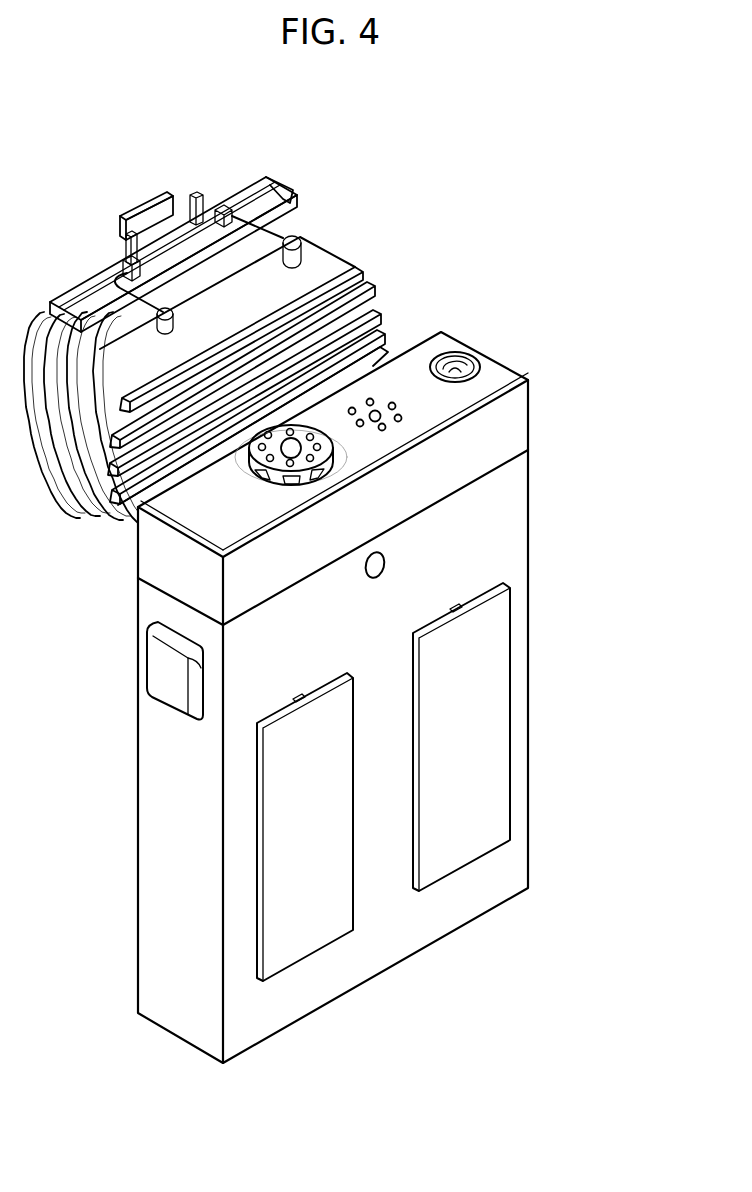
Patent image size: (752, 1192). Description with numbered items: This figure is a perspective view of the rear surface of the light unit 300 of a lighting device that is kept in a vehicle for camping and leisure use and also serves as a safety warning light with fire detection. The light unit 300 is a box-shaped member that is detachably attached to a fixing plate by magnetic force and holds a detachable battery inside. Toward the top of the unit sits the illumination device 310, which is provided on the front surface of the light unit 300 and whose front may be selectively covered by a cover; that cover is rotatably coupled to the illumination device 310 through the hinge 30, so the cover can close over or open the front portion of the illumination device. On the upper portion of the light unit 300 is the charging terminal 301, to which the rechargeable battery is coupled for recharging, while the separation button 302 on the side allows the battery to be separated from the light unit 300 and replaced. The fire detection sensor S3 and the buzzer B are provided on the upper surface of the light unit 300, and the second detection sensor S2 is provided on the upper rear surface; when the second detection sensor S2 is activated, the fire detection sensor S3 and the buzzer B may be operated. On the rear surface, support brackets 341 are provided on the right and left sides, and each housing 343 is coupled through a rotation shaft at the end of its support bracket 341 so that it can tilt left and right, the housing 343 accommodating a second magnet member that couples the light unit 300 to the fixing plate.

The hinge 30 is at (147, 205).
The illumination device 310 is at (207, 260).
The buzzer B is at (375, 408).
The charging terminal 301 is at (466, 352).
The second detection sensor S2 is at (378, 553).
The light unit 300 is at (540, 513).
The support bracket 341 is at (457, 603).
The housing 343 is at (485, 707).
The separation button 302 is at (155, 672).
The fire detection sensor S3 is at (288, 445).